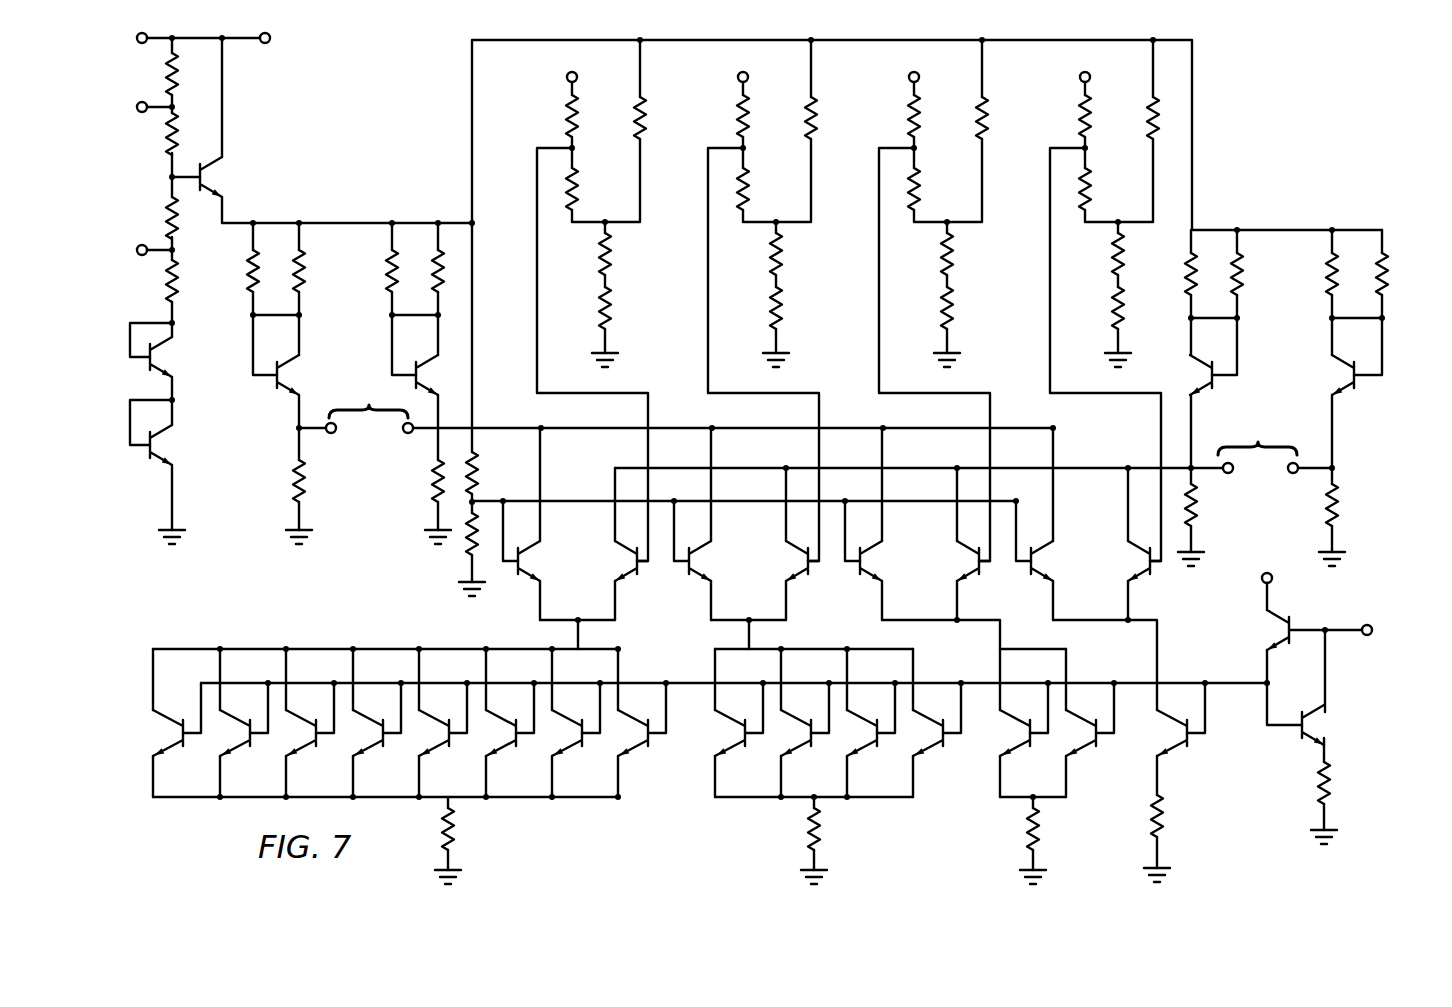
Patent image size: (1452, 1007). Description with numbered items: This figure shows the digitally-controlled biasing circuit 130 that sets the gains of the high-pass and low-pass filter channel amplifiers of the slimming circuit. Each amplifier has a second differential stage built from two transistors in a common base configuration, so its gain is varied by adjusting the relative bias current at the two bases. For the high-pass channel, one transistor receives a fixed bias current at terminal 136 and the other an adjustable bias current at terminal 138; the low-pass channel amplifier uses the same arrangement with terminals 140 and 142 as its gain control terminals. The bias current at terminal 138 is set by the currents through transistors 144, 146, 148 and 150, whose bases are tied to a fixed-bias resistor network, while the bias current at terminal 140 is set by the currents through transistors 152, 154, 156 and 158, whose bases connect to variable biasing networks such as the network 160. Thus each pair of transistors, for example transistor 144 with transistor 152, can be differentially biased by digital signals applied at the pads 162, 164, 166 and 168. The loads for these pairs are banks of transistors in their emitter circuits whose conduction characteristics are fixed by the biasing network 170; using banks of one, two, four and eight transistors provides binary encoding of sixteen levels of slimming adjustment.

The digitally-controlled biasing circuit 130 is at (1331, 104).
The terminal 136 is at (331, 433).
The terminal 138 is at (408, 433).
The terminal 140 is at (1228, 473).
The terminal 142 is at (1293, 473).
The transistor 144 is at (533, 563).
The transistor 146 is at (704, 563).
The transistor 148 is at (875, 563).
The transistor 150 is at (1046, 563).
The transistor 152 is at (618, 562).
The transistor 154 is at (789, 562).
The transistor 156 is at (960, 562).
The transistor 158 is at (1131, 562).
The variable biasing network 160 is at (648, 170).
The pad 162 is at (566, 75).
The pad 164 is at (737, 75).
The pad 166 is at (908, 75).
The pad 168 is at (1079, 75).
The fixed biasing network 170 is at (1334, 717).